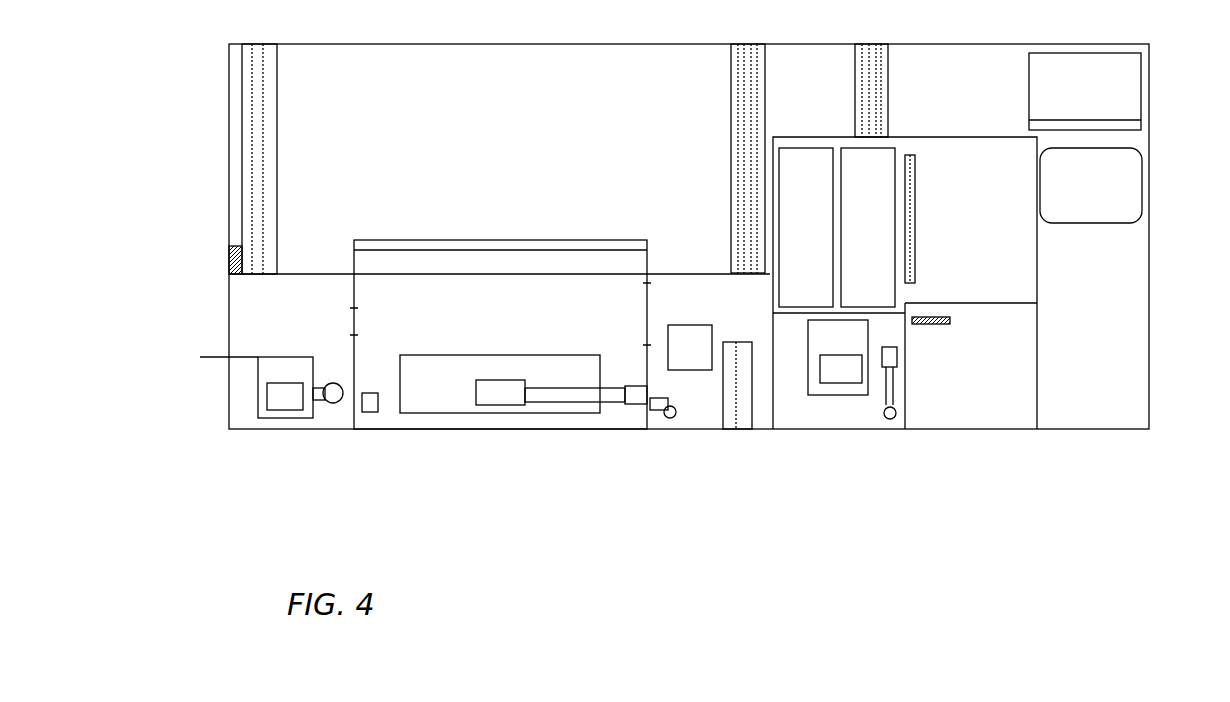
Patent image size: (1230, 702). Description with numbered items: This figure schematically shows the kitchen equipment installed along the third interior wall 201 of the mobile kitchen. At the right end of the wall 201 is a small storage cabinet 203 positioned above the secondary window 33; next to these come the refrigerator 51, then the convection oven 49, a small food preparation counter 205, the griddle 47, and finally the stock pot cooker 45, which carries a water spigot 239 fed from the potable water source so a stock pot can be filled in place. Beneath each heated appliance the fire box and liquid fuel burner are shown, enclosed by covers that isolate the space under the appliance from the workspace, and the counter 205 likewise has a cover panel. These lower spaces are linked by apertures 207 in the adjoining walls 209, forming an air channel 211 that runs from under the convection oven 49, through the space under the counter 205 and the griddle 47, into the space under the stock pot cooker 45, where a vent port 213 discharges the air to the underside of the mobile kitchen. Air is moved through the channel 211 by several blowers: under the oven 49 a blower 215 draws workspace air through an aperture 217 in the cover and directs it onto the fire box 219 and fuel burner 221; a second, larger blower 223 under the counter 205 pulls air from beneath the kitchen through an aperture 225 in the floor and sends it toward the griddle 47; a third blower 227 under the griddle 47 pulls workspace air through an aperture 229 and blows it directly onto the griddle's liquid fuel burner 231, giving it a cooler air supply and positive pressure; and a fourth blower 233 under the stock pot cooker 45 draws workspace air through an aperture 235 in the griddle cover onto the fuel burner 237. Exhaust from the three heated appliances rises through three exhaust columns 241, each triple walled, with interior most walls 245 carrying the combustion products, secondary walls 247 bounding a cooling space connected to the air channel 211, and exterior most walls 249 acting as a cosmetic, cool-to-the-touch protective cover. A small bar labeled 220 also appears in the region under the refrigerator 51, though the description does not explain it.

The third interior wall 201 is at (606, 44).
The exhaust column 241 is at (278, 68).
The interior most walls 245 is at (731, 62).
The secondary walls 247 is at (731, 100).
The exterior most walls 249 is at (731, 160).
The griddle 47 is at (480, 240).
The food preparation counter 205 is at (715, 273).
The convection oven 49 is at (790, 137).
The refrigerator 51 is at (962, 137).
The bar 220 is at (855, 318).
The small storage cabinet 203 is at (1125, 70).
The secondary window 33 is at (1130, 165).
The stock pot cooker 45 is at (229, 300).
The walls 209 is at (354, 308).
The apertures 207 is at (354, 335).
The water spigot 239 is at (216, 357).
The fuel burner 237 is at (258, 400).
The vent port 213 is at (258, 429).
The fourth air blower 233 is at (333, 403).
The aperture 235 is at (375, 412).
The liquid fuel burner 231 is at (495, 413).
The third blower 227 is at (625, 429).
The second air blower 223 is at (690, 370).
The aperture 229 is at (670, 418).
The aperture 225 is at (740, 429).
The air channel 211 is at (808, 395).
The fuel burner 221 is at (840, 395).
The fire box 219 is at (855, 429).
The blower 215 is at (897, 357).
The aperture 217 is at (897, 413).